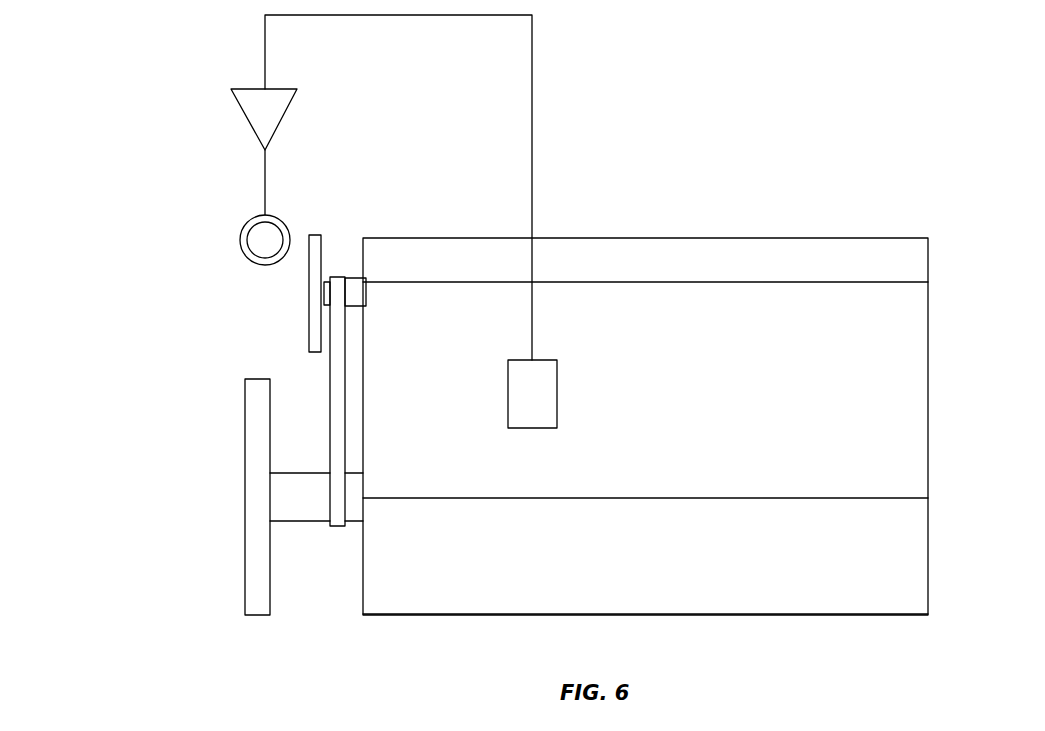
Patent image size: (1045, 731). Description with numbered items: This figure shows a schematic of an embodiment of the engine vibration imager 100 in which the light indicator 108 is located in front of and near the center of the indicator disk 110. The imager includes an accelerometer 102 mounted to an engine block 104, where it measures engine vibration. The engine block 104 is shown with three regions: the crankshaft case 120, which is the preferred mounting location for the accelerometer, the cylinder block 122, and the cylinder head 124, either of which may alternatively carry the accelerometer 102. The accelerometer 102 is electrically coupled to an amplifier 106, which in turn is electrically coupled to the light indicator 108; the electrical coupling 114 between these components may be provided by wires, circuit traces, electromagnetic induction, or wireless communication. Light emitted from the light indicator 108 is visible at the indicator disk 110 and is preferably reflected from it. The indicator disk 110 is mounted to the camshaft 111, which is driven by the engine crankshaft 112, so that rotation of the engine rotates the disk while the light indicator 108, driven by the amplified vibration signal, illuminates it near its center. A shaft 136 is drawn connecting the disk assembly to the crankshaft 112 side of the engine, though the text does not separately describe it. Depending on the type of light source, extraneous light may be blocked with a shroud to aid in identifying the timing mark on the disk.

The engine vibration imager 100 is at (160, 80).
The accelerometer 102 is at (557, 387).
The engine block 104 is at (790, 187).
The amplifier 106 is at (283, 117).
The light indicator 108 is at (240, 230).
The indicator disk 110 is at (323, 245).
The camshaft 111 is at (382, 250).
The engine crankshaft 112 is at (307, 522).
The electrical coupling 114 is at (532, 153).
The crankshaft case 120 is at (645, 586).
The cylinder block 122 is at (645, 468).
The cylinder head 124 is at (645, 269).
The shaft 136 is at (335, 387).